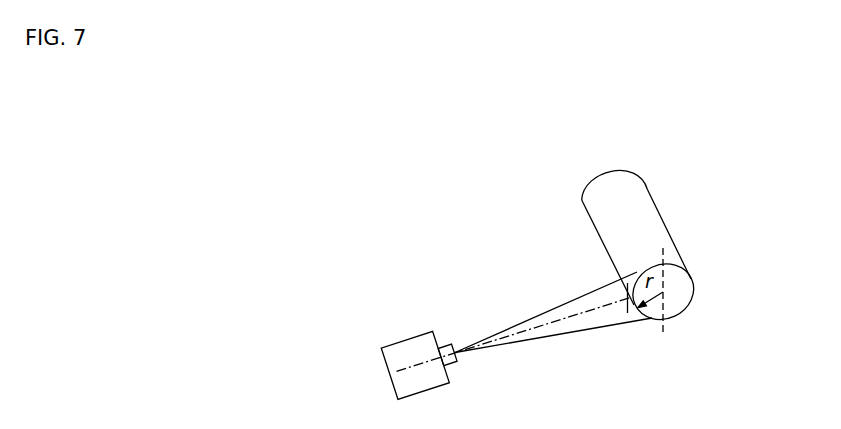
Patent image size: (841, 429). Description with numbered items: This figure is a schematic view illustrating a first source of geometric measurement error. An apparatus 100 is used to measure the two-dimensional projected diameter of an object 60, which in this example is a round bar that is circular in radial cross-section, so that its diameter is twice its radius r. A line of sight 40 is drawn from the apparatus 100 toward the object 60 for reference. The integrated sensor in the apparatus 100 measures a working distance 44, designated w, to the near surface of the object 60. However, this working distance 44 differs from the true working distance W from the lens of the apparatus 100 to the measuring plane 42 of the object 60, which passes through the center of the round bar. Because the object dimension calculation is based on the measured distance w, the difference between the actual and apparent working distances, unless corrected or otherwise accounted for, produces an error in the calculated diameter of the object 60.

The apparatus 100 is at (413, 347).
The line of sight 40 is at (550, 310).
The working distance 44 is at (569, 316).
The object 60 is at (640, 202).
The measuring plane 42 is at (663, 327).